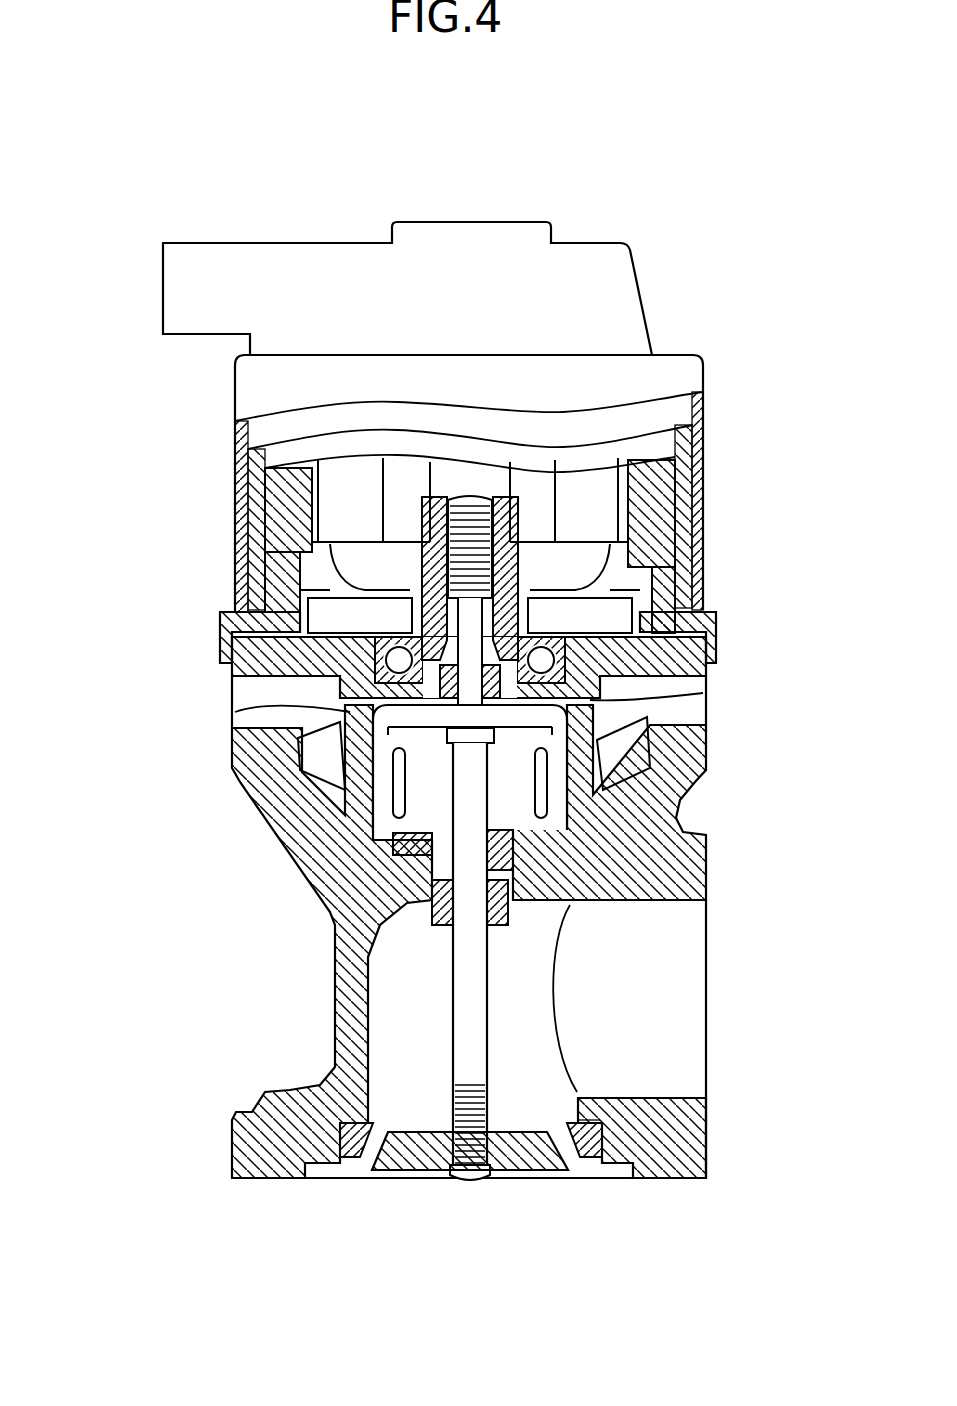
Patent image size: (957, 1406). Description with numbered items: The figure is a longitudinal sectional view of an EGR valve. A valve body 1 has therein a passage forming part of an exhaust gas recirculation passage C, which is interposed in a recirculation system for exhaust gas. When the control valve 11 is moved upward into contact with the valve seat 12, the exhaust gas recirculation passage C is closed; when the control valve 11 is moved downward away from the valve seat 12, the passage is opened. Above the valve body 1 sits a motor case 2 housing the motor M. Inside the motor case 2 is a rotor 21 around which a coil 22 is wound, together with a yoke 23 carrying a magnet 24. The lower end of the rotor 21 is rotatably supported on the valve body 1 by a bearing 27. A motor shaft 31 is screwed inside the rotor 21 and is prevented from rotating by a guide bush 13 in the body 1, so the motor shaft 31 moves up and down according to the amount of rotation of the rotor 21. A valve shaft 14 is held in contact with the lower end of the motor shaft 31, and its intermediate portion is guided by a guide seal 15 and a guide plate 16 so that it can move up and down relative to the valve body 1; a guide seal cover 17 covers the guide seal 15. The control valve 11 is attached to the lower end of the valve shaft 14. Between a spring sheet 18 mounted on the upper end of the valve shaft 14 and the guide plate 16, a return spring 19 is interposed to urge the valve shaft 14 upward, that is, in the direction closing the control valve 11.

The valve body 1 is at (660, 792).
The motor case 2 is at (238, 257).
The motor M is at (300, 570).
The control valve 11 is at (410, 1160).
The valve seat 12 is at (593, 1157).
The guide bush 13 is at (620, 699).
The valve shaft 14 is at (477, 1038).
The guide seal 15 is at (627, 900).
The guide plate 16 is at (650, 858).
The guide seal cover 17 is at (447, 923).
The spring sheet 18 is at (378, 713).
The return spring 19 is at (390, 802).
The rotor 21 is at (585, 527).
The coil 22 is at (577, 562).
The yoke 23 is at (690, 610).
The magnet 24 is at (290, 517).
The bearing 27 is at (690, 668).
The motor shaft 31 is at (485, 525).
The exhaust gas recirculation passage C is at (687, 1055).